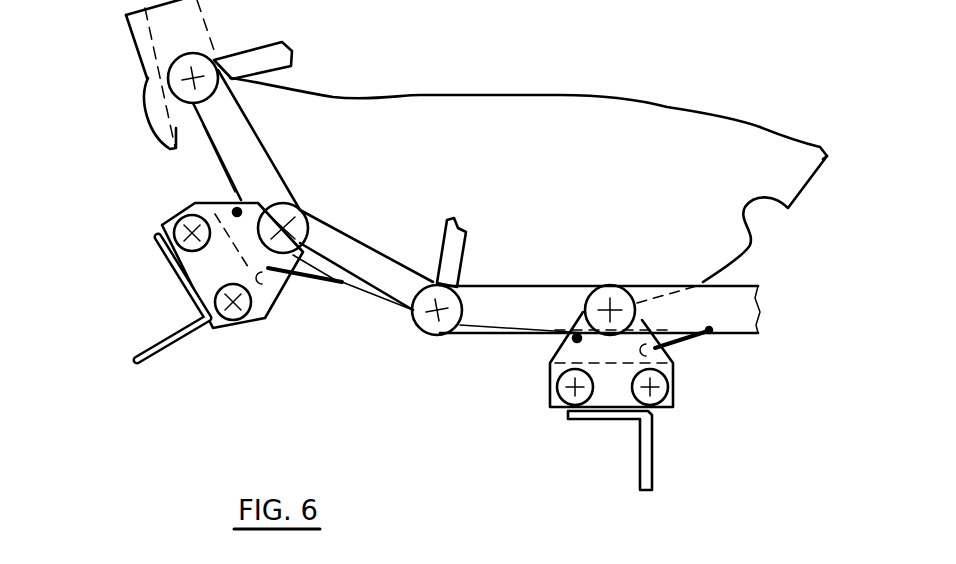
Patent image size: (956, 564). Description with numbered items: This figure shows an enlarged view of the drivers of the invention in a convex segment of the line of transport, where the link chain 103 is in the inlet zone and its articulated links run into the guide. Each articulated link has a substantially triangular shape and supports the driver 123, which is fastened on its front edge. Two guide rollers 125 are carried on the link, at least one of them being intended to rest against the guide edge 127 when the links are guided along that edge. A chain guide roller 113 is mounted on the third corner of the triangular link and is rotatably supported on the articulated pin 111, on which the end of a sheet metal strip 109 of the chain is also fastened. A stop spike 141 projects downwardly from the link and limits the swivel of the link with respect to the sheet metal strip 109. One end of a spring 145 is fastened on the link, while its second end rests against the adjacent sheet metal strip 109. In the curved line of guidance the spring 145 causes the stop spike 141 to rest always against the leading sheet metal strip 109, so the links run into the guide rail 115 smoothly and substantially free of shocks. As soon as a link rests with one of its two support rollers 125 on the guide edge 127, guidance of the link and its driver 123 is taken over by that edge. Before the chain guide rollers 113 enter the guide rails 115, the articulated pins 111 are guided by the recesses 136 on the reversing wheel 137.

The link chain 103 is at (492, 258).
The sheet metal strip 109 is at (507, 318).
The articulated pin 111 is at (296, 232).
The chain guide roller 113 is at (422, 335).
The guide rail 115 is at (183, 38).
The driver 123 is at (157, 352).
The guide rollers 125 is at (175, 258).
The guide edge 127 is at (137, 53).
The recesses 136 is at (743, 215).
The reversing wheel 137 is at (757, 132).
The stop spike 141 is at (248, 202).
The spring 145 is at (297, 287).